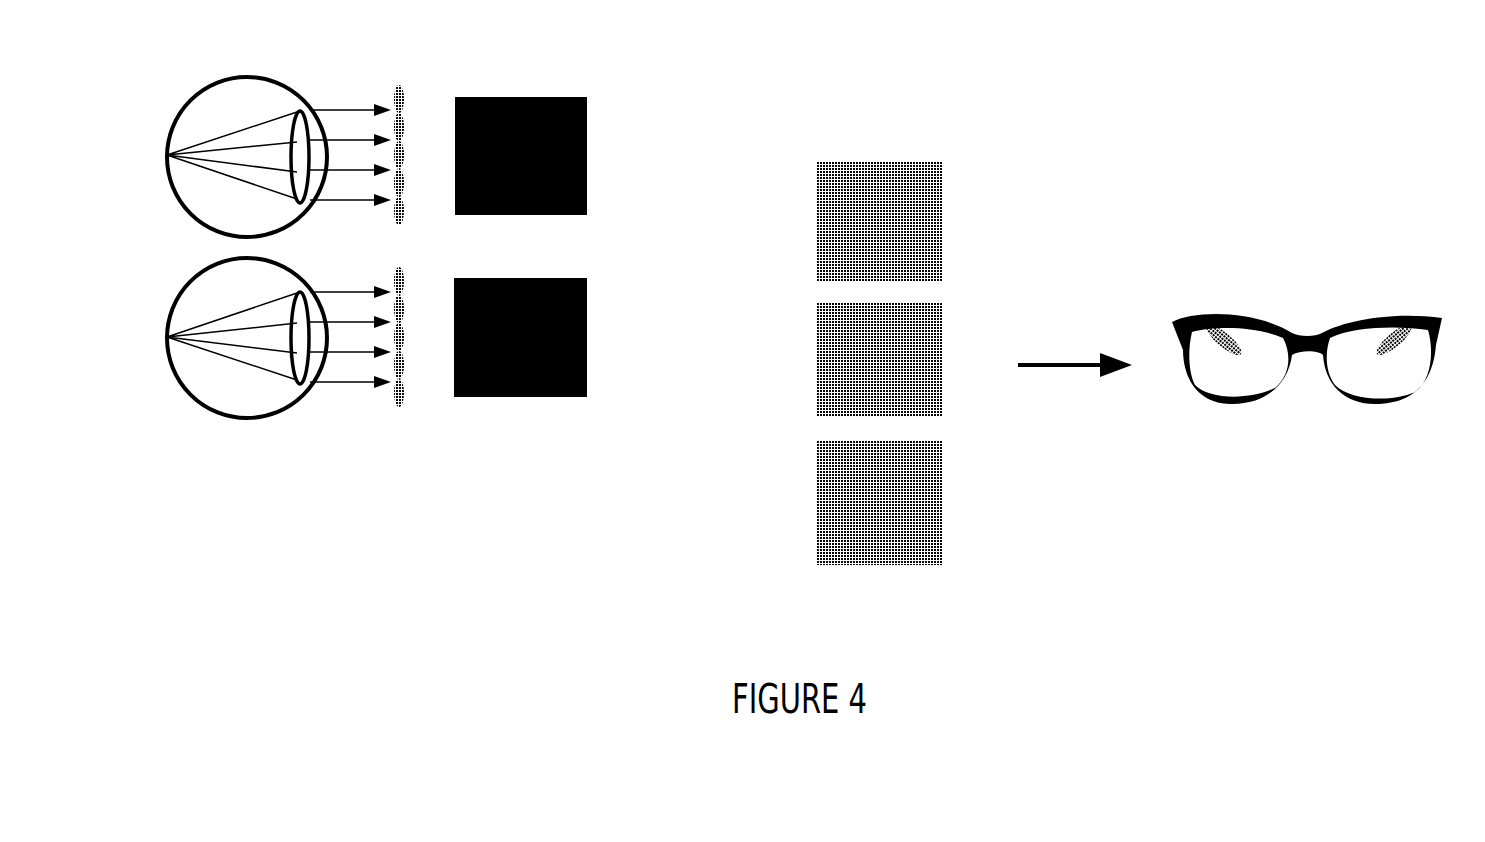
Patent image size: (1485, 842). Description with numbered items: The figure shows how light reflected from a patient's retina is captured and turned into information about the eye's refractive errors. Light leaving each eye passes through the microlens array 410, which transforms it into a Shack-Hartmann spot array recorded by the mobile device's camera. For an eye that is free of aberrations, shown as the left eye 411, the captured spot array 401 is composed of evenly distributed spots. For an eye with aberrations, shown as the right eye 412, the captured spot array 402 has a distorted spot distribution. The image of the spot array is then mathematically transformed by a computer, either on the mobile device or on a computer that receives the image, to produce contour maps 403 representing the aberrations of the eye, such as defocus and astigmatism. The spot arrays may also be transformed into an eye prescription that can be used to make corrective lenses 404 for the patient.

The spot array with evenly distributed spots 401 is at (578, 97).
The spot array with distorted spot distribution 402 is at (578, 278).
The contour maps representing the aberrations of the eye 403 is at (880, 125).
The corrective lenses 404 is at (1262, 277).
The microlens array 410 is at (396, 63).
The left eye 411 is at (167, 155).
The right eye 412 is at (167, 337).